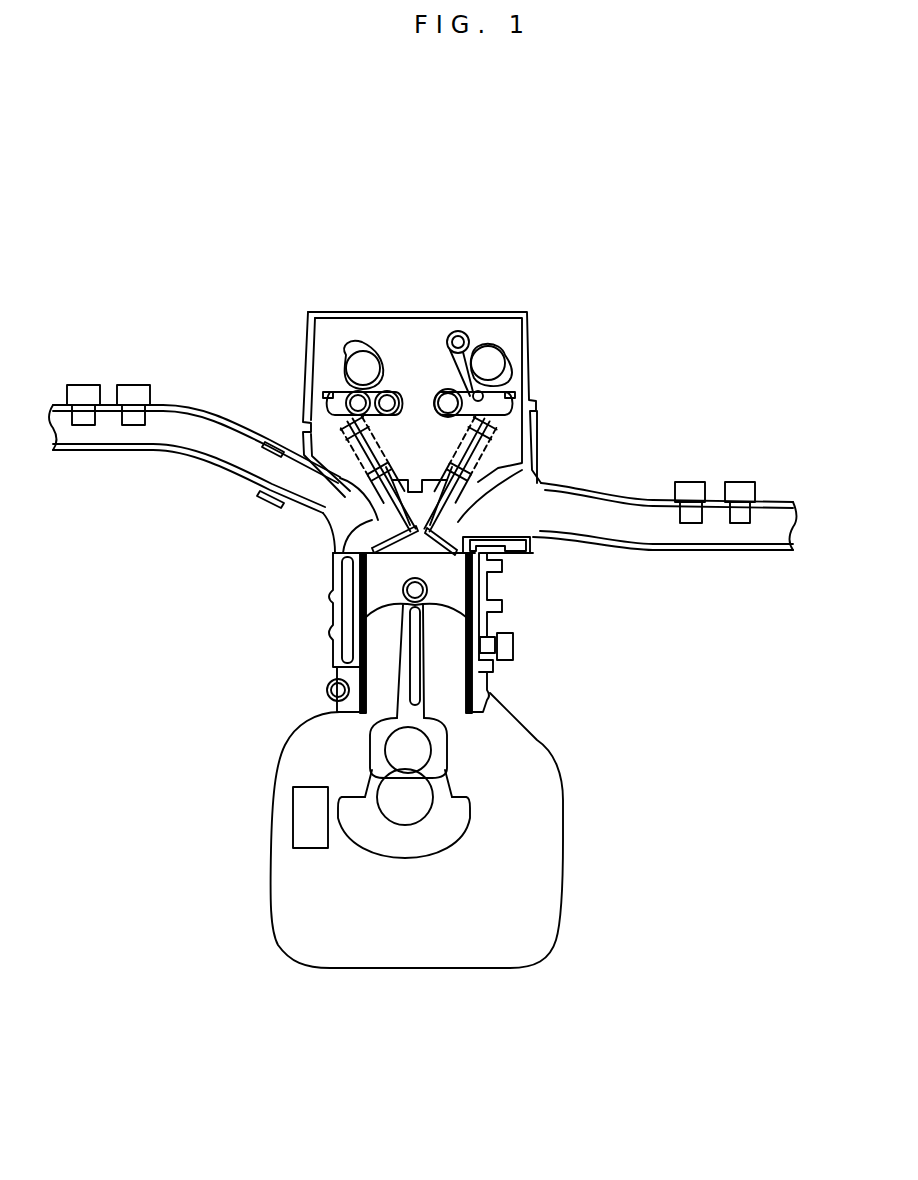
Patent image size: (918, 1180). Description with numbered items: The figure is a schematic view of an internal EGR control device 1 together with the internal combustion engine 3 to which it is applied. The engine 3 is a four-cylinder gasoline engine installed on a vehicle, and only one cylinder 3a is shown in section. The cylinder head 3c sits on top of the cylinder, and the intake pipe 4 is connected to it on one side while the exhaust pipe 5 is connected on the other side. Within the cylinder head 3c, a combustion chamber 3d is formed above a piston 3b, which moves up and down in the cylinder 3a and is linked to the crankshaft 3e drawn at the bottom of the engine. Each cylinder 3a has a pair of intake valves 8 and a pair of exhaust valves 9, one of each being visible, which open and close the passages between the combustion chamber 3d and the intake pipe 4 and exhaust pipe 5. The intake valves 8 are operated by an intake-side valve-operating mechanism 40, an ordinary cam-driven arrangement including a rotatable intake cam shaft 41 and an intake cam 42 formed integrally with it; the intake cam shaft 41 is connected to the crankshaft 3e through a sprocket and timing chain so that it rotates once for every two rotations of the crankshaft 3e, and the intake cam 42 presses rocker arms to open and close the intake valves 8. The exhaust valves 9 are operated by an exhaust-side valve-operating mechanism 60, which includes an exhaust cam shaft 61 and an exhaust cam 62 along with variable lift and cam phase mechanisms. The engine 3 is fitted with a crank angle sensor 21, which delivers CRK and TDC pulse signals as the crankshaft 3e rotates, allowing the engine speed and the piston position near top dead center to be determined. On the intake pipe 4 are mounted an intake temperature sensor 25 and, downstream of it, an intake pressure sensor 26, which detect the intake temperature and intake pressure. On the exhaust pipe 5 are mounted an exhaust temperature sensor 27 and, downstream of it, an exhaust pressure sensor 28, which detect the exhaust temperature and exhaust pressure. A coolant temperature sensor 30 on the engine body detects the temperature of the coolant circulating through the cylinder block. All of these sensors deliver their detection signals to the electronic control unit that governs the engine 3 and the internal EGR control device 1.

The internal EGR control device 1 is at (549, 171).
The internal combustion engine 3 is at (405, 291).
The cylinder 3a is at (345, 673).
The piston 3b is at (380, 578).
The cylinder head 3c is at (538, 455).
The combustion chamber 3d is at (432, 552).
The crankshaft 3e is at (420, 820).
The intake pipe 4 is at (205, 470).
The exhaust pipe 5 is at (757, 553).
The intake valve 8 is at (355, 522).
The exhaust valve 9 is at (525, 540).
The crank angle sensor 21 is at (293, 830).
The intake temperature sensor 25 is at (83, 385).
The intake pressure sensor 26 is at (133, 385).
The exhaust temperature sensor 27 is at (690, 482).
The exhaust pressure sensor 28 is at (740, 482).
The coolant temperature sensor 30 is at (515, 645).
The intake-side valve-operating mechanism 40 is at (338, 332).
The intake cam shaft 41 is at (355, 370).
The intake cam 42 is at (352, 345).
The exhaust-side valve-operating mechanism 60 is at (476, 325).
The exhaust cam shaft 61 is at (490, 362).
The exhaust cam 62 is at (505, 372).